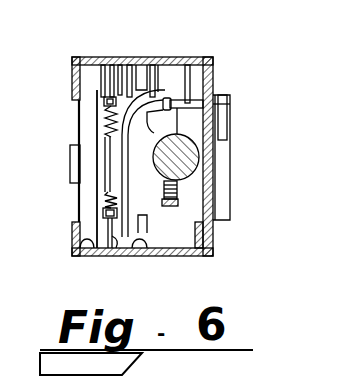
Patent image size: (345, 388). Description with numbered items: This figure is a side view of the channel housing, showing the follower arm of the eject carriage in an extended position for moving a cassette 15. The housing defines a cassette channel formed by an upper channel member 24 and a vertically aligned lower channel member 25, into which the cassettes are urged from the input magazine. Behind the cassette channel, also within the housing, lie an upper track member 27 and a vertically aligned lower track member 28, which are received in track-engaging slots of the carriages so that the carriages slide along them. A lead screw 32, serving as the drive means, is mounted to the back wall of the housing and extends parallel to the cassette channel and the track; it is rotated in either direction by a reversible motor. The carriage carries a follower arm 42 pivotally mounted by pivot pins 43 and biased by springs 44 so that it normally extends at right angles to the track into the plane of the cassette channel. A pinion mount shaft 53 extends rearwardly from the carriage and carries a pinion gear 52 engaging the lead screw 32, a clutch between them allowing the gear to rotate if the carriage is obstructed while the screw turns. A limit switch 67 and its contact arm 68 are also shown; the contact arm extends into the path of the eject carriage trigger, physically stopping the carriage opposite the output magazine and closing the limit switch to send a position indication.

The cassette 15 is at (93, 185).
The upper channel member 24 is at (88, 72).
The lower channel member 25 is at (78, 243).
The upper track member 27 is at (140, 73).
The lower track member 28 is at (143, 237).
The lead screw 32 is at (190, 160).
The load carriage follower arm 42 is at (72, 154).
The pivot pin 43 is at (100, 99).
The spring 44 is at (106, 118).
The pinion gear 52 is at (174, 200).
The pinion mount shaft 53 is at (166, 207).
The limit switch 67 is at (228, 123).
The contact arm 68 is at (188, 67).